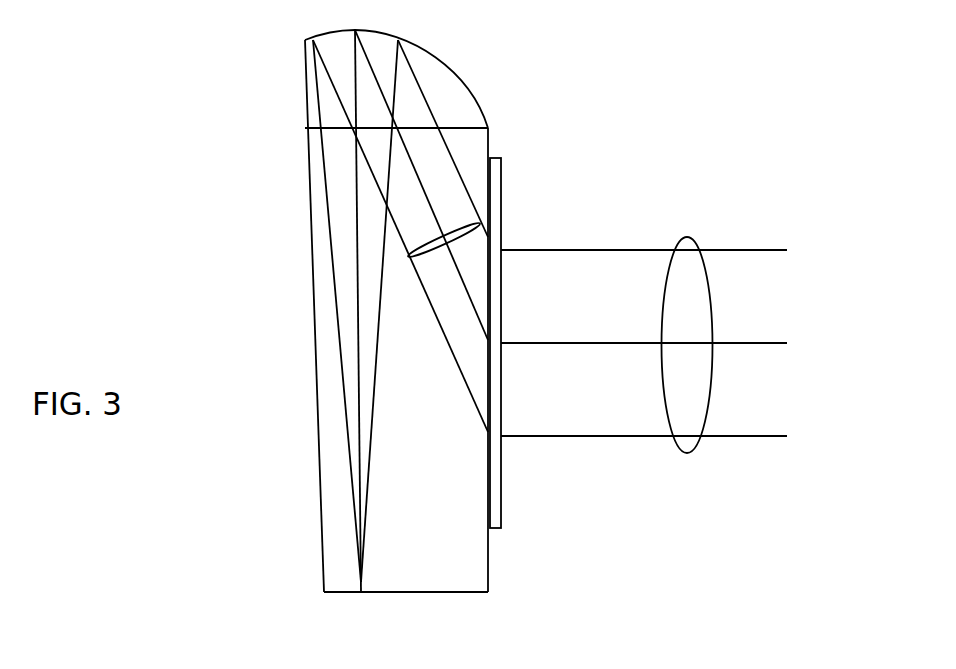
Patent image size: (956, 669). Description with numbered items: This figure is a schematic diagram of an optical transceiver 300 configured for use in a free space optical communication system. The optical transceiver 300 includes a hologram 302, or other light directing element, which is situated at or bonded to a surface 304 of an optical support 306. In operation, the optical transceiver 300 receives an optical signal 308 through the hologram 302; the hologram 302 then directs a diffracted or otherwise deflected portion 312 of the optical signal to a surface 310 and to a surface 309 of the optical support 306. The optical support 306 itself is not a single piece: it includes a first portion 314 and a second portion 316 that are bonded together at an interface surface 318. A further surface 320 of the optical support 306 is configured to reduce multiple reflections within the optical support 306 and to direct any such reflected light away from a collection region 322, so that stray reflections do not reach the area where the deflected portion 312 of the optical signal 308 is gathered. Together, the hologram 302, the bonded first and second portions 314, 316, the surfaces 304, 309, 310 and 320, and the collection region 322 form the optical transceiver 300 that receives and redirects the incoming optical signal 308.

The optical transceiver 300 is at (710, 146).
The hologram 302 is at (501, 158).
The surface 304 is at (487, 553).
The optical support 306 is at (413, 567).
The optical signal 308 is at (690, 233).
The surface 309 is at (338, 590).
The surface 310 is at (453, 70).
The deflected portion 312 is at (480, 225).
The first portion 314 is at (317, 118).
The second portion 316 is at (325, 413).
The interface surface 318 is at (308, 129).
The surface 320 is at (312, 245).
The collection region 322 is at (360, 595).